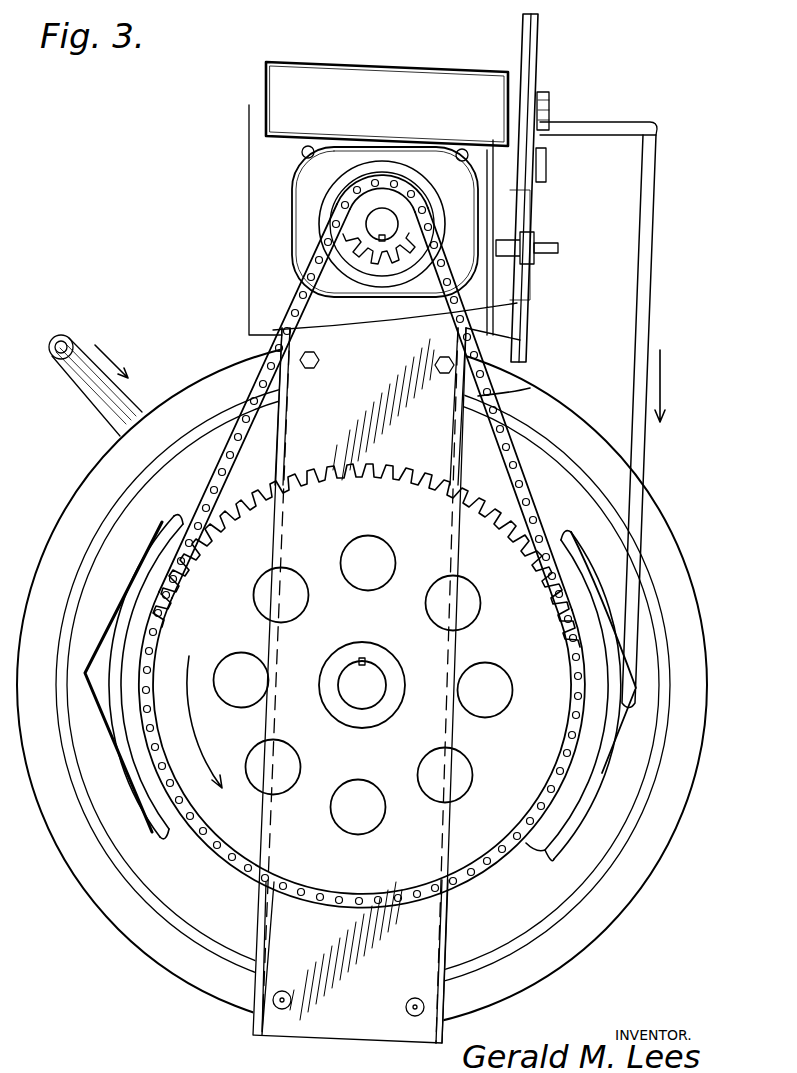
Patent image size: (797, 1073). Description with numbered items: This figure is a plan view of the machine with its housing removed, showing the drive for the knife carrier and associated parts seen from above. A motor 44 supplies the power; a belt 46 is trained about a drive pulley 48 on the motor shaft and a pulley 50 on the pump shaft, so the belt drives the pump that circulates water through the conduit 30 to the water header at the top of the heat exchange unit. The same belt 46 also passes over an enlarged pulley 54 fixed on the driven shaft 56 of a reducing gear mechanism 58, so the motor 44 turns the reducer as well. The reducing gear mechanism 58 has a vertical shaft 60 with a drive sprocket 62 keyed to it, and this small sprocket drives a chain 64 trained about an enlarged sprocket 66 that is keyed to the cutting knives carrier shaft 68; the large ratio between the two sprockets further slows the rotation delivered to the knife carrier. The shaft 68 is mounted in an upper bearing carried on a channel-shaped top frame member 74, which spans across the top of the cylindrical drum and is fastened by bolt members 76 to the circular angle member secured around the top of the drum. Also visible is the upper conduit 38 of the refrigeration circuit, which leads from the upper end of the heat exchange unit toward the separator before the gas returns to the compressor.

The conduit 30 is at (655, 245).
The upper conduit 38 is at (78, 378).
The motor 44 is at (485, 308).
The belt 46 is at (527, 216).
The drive pulley 48 is at (533, 245).
The pulley 50 is at (540, 168).
The enlarged pulley 54 is at (540, 50).
The driven shaft 56 is at (549, 108).
The reducing gear mechanism 58 is at (386, 72).
The vertical shaft 60 is at (375, 222).
The drive sprocket 62 is at (383, 262).
The chain 64 is at (530, 388).
The enlarged sprocket 66 is at (333, 462).
The cutting knives carrier shaft 68 is at (350, 700).
The channel-shaped top frame member 74 is at (360, 1030).
The bolt members 76 is at (436, 368).